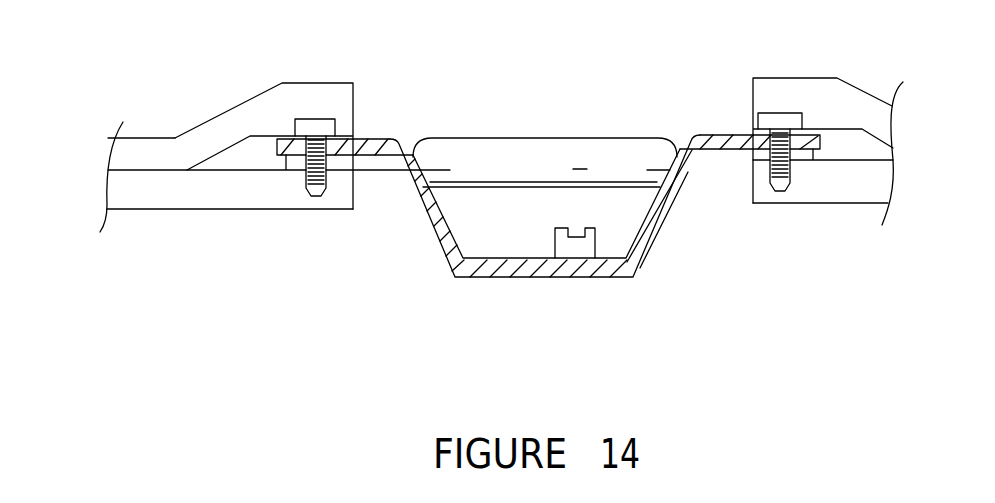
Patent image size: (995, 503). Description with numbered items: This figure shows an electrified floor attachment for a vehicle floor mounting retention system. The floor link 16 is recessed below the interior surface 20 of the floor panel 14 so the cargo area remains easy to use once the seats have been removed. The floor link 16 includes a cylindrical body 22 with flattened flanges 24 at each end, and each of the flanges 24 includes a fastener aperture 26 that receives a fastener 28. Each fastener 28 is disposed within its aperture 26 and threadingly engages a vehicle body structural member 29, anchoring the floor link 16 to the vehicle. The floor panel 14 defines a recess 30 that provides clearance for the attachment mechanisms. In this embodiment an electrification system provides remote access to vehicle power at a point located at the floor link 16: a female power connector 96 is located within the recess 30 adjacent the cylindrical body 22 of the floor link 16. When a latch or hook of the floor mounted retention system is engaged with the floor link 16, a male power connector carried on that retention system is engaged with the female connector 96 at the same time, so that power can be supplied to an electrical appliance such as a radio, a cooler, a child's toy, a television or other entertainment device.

The floor panel 14 is at (135, 153).
The floor link 16 is at (582, 116).
The interior surface 20 is at (150, 137).
The cylindrical body 22 is at (470, 147).
The flattened flanges 24 is at (357, 168).
The fastener aperture 26 is at (303, 182).
The fastener 28 is at (318, 132).
The vehicle body structural member 29 is at (180, 195).
The recess 30 is at (503, 232).
The female power connector 96 is at (583, 243).